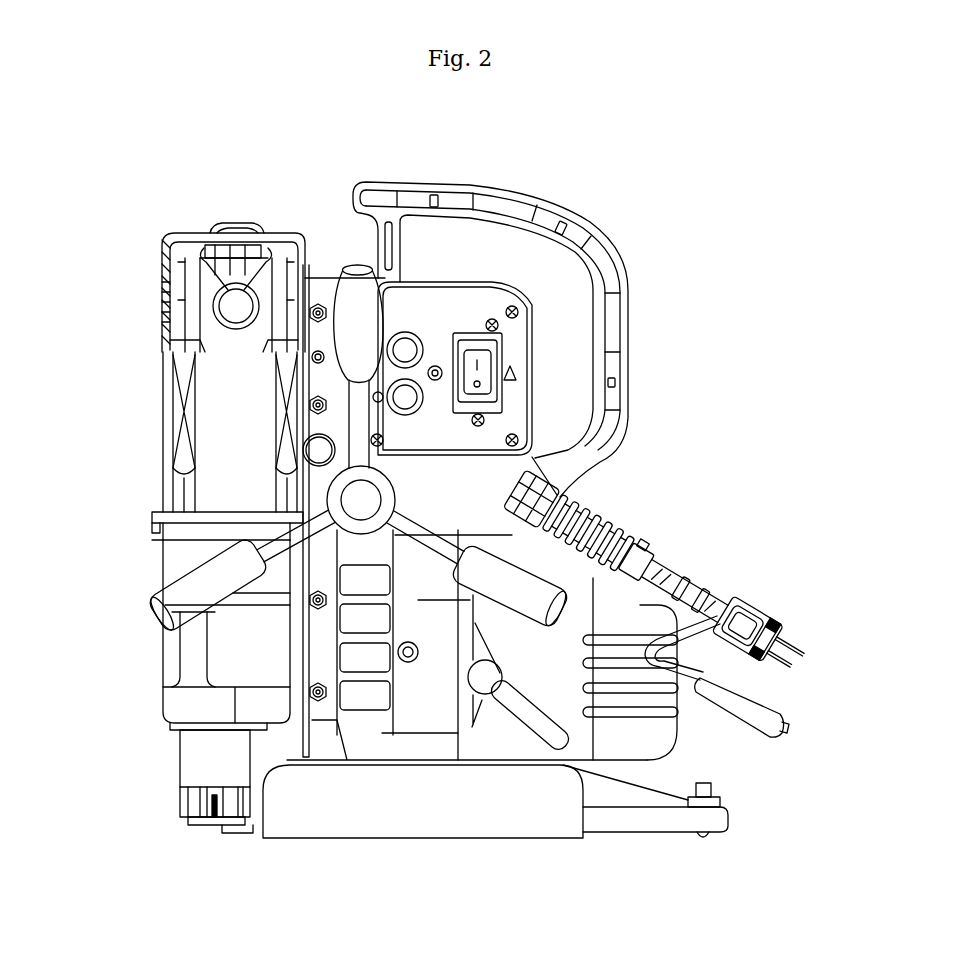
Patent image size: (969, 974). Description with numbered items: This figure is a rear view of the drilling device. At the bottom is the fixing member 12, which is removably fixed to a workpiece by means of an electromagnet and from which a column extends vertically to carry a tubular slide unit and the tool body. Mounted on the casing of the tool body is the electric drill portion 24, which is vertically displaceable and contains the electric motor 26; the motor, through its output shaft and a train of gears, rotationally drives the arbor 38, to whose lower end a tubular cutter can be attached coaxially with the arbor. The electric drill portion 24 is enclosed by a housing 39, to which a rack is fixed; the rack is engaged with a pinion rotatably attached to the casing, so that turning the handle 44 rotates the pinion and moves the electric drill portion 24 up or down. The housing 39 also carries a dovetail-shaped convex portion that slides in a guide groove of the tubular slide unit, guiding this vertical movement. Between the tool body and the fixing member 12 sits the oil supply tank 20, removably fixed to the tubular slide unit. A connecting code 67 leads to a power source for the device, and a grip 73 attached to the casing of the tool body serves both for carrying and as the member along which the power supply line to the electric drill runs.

The fixing member 12 is at (478, 817).
The oil supply tank 20 is at (642, 625).
The electric drill portion 24 is at (143, 285).
The electric motor 26 is at (225, 398).
The arbor 38 is at (198, 757).
The housing 39 is at (167, 557).
The handle 44 is at (345, 263).
The connecting code 67 is at (652, 560).
The grip 73 is at (582, 215).